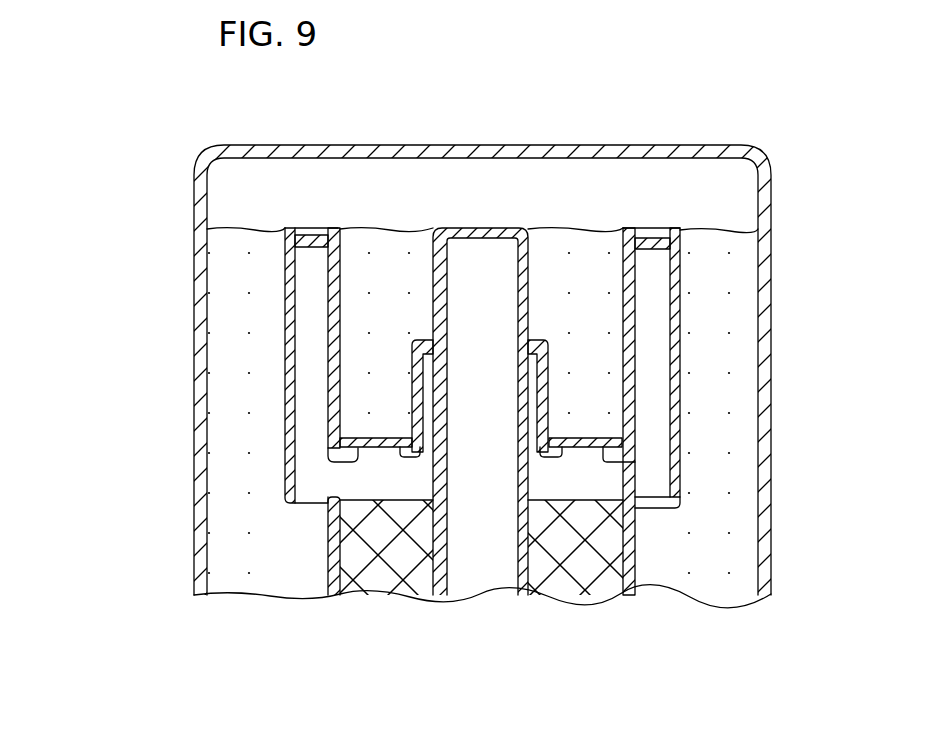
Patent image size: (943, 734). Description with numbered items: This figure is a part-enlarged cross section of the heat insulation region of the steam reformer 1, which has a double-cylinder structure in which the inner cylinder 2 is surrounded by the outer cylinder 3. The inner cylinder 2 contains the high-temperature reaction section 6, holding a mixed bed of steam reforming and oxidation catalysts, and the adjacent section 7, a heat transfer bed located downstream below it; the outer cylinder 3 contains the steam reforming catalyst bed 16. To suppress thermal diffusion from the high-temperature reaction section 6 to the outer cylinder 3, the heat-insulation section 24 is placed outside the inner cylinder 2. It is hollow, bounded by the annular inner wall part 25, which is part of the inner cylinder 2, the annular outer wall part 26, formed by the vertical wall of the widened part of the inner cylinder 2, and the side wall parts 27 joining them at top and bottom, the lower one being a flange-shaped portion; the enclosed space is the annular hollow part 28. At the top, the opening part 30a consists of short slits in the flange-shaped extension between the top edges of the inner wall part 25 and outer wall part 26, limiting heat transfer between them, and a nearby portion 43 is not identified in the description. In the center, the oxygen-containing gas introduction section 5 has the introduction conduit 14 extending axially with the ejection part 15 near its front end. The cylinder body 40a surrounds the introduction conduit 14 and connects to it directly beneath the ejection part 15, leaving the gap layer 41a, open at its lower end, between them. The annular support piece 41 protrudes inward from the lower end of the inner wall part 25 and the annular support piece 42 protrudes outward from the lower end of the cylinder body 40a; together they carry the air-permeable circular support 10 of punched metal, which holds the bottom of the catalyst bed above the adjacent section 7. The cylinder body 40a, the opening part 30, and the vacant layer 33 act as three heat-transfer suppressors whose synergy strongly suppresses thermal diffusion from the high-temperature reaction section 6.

The steam reformer 1 is at (152, 168).
The inner cylinder 2 is at (326, 549).
The outer cylinder 3 is at (773, 192).
The oxygen-containing gas introduction section 5 is at (485, 371).
The high-temperature reaction section 6 is at (595, 310).
The adjacent section 7 is at (585, 572).
The air-permeable circular support 10 is at (340, 436).
The introduction conduit 14 is at (505, 227).
The ejection part 15 is at (530, 305).
The steam reforming catalyst bed 16 is at (740, 422).
The heat-insulation section 24 is at (283, 279).
The annular inner wall part 25 is at (330, 362).
The annular outer wall part 26 is at (285, 317).
The side wall part 27 is at (298, 230).
The annular hollow part 28 is at (307, 398).
The opening part 30 is at (328, 517).
The opening part 30a is at (312, 236).
The vacant layer 33 is at (634, 510).
The cylinder body 40a is at (411, 380).
The annular support piece 41 is at (358, 462).
The gap layer 41a is at (530, 430).
The annular support piece 42 is at (528, 498).
The corner portion 43 is at (291, 252).